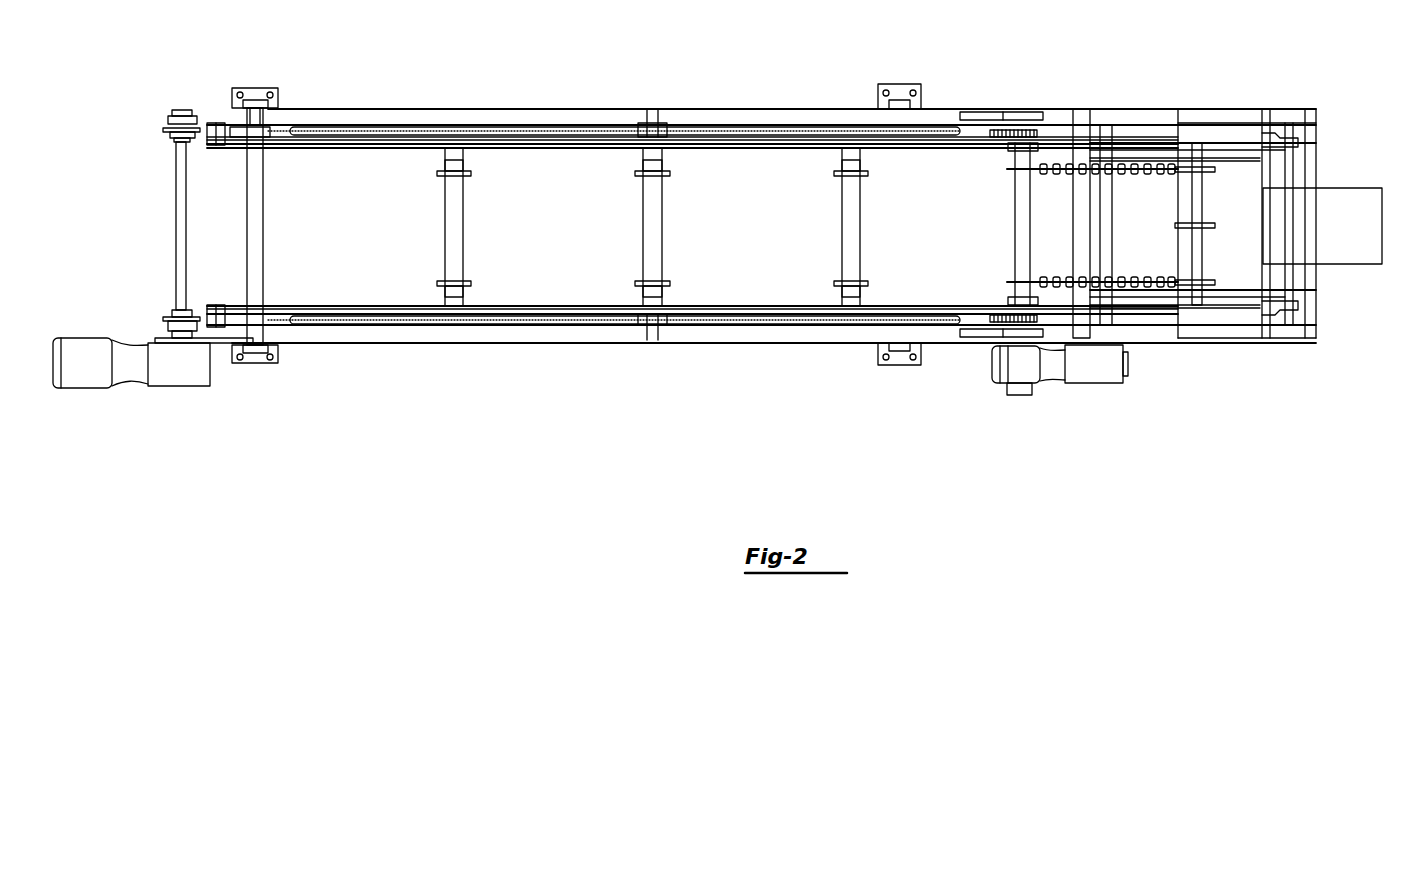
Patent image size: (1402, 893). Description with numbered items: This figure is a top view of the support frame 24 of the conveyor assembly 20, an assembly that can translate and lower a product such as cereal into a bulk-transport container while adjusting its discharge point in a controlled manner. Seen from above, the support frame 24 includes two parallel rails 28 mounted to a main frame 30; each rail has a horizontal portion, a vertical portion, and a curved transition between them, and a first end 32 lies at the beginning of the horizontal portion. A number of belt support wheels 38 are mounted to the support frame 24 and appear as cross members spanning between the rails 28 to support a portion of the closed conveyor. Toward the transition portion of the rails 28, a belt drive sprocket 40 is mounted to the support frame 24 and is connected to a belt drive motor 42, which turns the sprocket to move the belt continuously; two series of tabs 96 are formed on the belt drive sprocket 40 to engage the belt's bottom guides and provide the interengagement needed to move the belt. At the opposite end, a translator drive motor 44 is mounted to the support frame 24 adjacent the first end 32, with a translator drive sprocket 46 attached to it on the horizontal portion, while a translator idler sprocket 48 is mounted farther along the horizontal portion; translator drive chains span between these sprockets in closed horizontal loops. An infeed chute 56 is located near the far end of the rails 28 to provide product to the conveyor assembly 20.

The conveyor assembly 20 is at (422, 416).
The support frame 24 is at (566, 106).
The parallel rails 28 is at (386, 146).
The main frame 30 is at (546, 344).
The first end 32 is at (232, 130).
The belt support wheels 38 is at (470, 174).
The belt drive sprocket 40 is at (1085, 173).
The belt drive motor 42 is at (1052, 368).
The translator drive motor 44 is at (80, 338).
The translator drive sprocket 46 is at (163, 131).
The translator idler sprocket 48 is at (1003, 140).
The infeed chute 56 is at (1334, 188).
The series of tabs 96 is at (1118, 176).